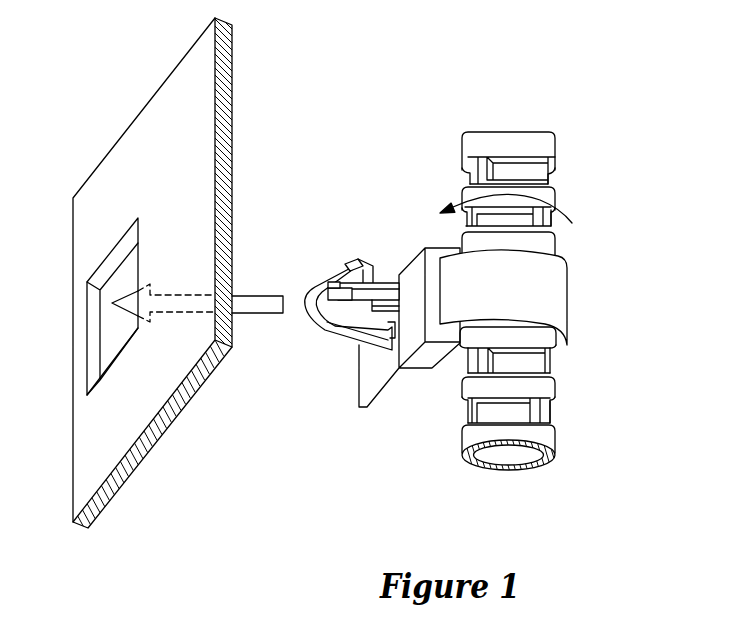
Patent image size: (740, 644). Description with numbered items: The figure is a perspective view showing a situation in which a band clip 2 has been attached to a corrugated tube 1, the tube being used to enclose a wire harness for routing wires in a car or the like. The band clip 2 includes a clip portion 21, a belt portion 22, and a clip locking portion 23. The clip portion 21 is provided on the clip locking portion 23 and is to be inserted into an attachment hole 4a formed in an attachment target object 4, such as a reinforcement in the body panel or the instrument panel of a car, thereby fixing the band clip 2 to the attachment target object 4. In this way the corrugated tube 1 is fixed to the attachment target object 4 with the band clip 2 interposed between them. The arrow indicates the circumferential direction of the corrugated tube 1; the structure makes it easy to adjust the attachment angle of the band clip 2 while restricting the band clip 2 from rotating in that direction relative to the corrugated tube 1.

The corrugated tube 1 is at (508, 130).
The band clip 2 is at (461, 289).
The clip portion 21 is at (307, 291).
The belt portion 22 is at (553, 302).
The clip locking portion 23 is at (421, 360).
The attachment target object 4 is at (143, 108).
The attachment hole 4a is at (92, 313).